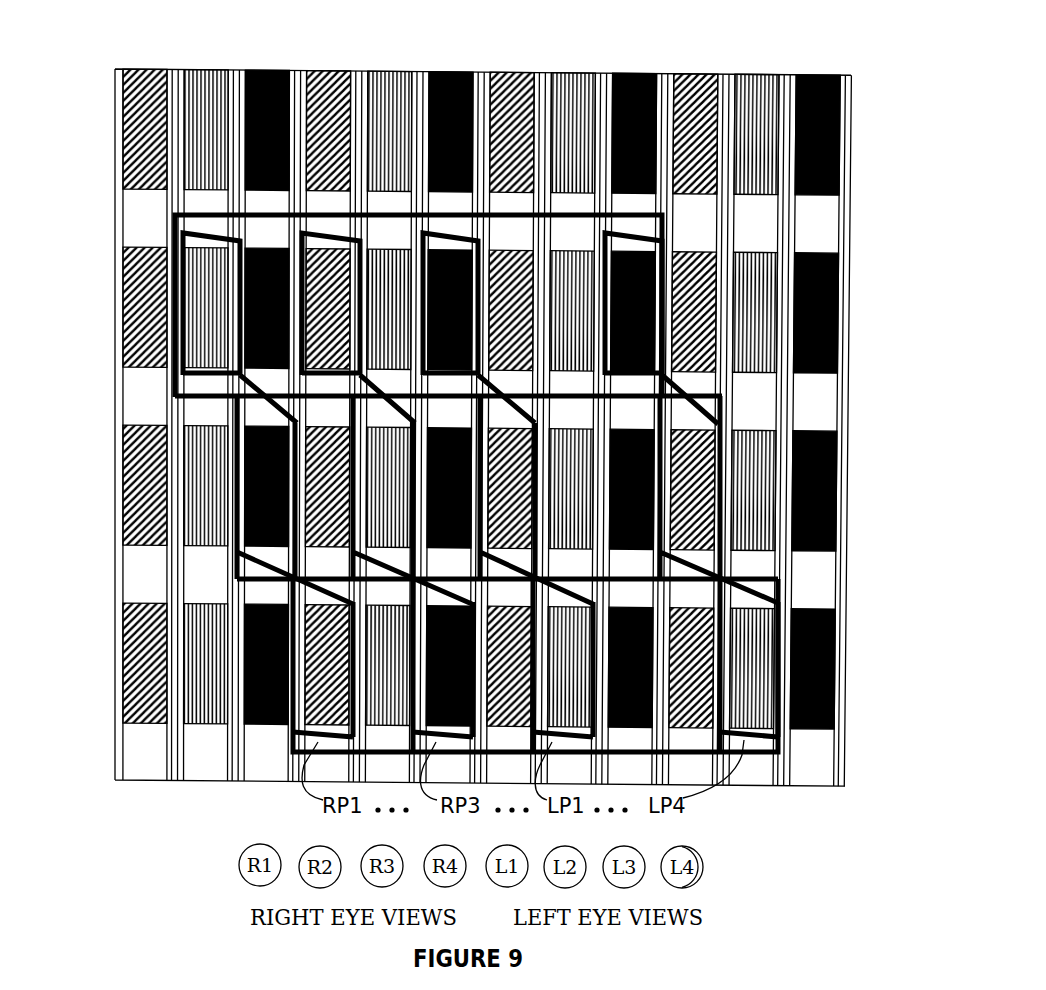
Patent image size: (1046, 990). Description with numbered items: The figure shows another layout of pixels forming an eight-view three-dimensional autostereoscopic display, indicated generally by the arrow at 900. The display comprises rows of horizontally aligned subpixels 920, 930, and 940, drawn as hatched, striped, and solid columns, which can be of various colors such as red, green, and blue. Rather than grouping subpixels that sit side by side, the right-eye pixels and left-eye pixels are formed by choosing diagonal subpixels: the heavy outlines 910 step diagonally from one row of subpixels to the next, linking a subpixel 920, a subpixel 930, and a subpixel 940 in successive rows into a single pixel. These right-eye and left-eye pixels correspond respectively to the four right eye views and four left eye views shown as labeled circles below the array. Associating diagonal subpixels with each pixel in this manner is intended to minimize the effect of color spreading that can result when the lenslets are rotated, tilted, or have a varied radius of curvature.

The autostereoscopic display pixel arrangement 900 is at (163, 856).
The pixel group interconnection outline 910 is at (293, 740).
The subpixel 920 is at (702, 72).
The subpixel 930 is at (740, 75).
The subpixel 940 is at (813, 76).